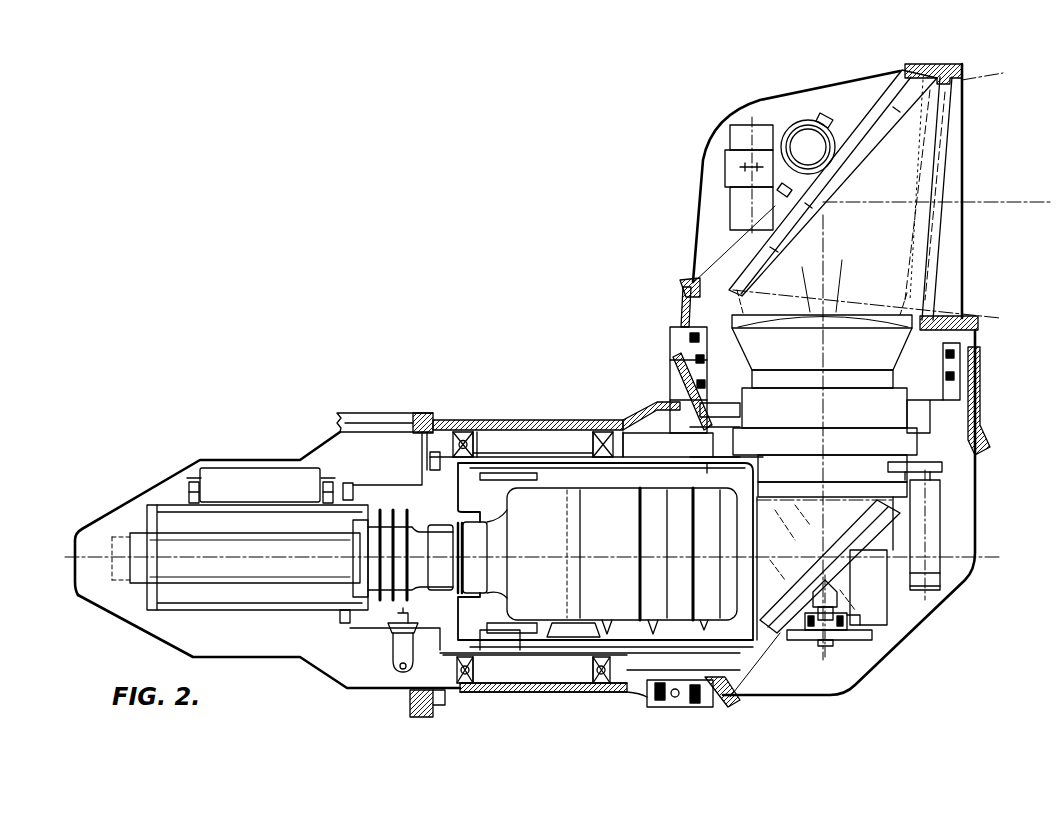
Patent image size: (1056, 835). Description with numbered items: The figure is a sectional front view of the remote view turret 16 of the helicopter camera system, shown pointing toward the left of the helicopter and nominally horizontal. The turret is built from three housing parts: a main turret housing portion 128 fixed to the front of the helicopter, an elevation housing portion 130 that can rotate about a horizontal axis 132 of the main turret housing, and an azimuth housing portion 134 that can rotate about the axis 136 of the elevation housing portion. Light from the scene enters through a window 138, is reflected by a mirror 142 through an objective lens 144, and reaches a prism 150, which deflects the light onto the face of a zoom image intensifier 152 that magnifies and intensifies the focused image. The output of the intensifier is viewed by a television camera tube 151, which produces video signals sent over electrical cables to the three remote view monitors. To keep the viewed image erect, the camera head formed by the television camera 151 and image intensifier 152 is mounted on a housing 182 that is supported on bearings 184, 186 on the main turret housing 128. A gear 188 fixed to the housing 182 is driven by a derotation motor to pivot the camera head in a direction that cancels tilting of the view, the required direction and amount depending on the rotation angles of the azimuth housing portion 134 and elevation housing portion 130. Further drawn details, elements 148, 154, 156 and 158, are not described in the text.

The remote view turret 16 is at (988, 126).
The main turret housing portion 128 is at (487, 693).
The elevation housing portion 130 is at (980, 397).
The horizontal axis 132 is at (585, 556).
The azimuth housing portion 134 is at (682, 296).
The axis 136 is at (810, 113).
The window 138 is at (943, 167).
The mirror 142 is at (845, 180).
The objective lens 144 is at (842, 310).
The folding mirror 148 is at (780, 637).
The prism 150 is at (845, 643).
The television camera tube 151 is at (257, 507).
The zoom image intensifier 152 is at (547, 483).
The mounting flange 154 is at (890, 380).
The seal assembly 156 is at (657, 688).
The shaft coupling 158 is at (462, 520).
The housing 182 is at (433, 457).
The bearing 184 is at (462, 678).
The bearing 186 is at (595, 662).
The gear 188 is at (448, 663).